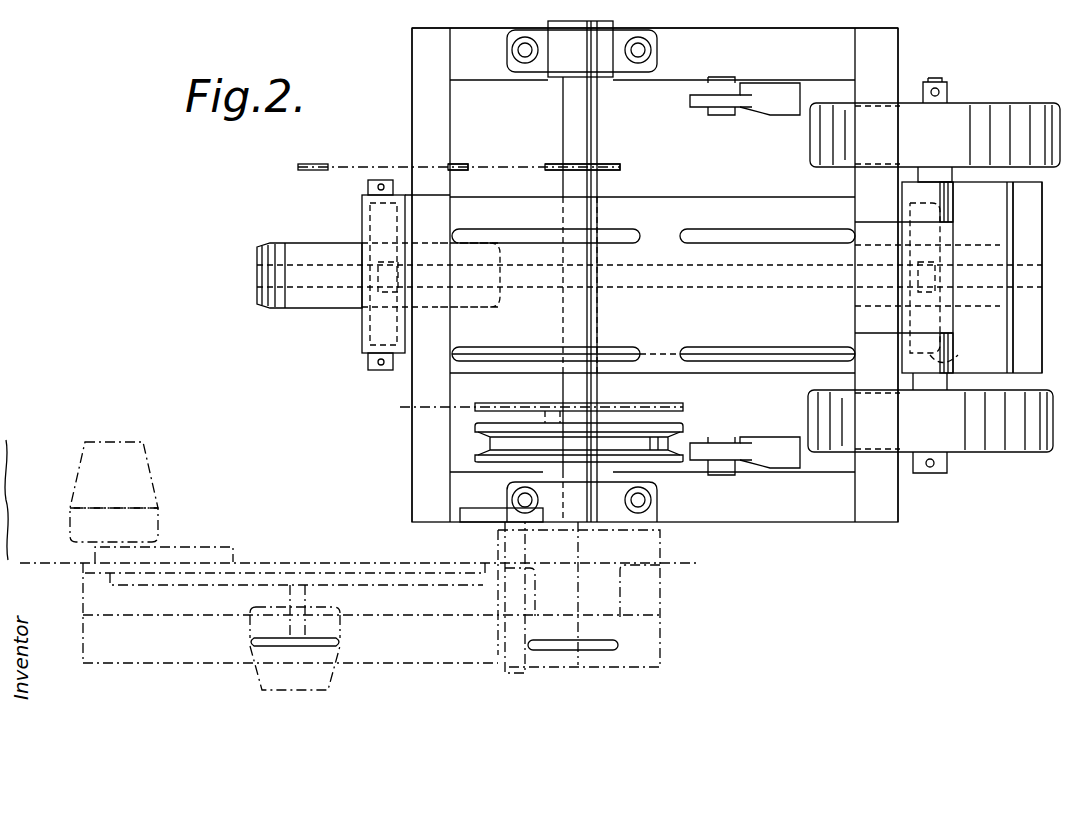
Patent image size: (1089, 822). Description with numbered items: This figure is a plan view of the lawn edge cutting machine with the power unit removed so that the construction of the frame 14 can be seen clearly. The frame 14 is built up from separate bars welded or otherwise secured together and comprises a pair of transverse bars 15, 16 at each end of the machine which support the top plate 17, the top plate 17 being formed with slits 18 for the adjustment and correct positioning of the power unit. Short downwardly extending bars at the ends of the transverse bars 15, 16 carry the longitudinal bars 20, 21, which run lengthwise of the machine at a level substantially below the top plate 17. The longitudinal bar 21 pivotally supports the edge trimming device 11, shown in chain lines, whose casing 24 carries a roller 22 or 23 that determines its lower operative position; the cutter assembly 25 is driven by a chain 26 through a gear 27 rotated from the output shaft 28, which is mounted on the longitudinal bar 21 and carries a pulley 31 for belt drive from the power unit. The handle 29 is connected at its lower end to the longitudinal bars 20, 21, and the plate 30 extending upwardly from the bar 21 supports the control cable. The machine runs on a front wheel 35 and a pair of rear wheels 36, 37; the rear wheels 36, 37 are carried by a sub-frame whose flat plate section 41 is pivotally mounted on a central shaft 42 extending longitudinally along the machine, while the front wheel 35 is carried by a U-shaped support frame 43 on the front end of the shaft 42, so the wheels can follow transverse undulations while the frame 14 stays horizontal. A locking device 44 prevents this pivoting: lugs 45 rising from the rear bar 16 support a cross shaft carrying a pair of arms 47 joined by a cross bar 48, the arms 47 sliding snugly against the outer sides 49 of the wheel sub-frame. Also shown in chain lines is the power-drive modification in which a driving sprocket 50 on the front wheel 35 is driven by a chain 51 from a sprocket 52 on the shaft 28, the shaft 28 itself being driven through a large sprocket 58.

The edge trimming device 11 is at (480, 670).
The frame 14 is at (822, 48).
The transverse bar 15 is at (412, 74).
The transverse bar 16 is at (895, 78).
The top plate 17 is at (674, 208).
The slits 18 is at (685, 236).
The longitudinal bar 20 is at (490, 64).
The longitudinal bar 21 is at (790, 512).
The roller 22 is at (150, 496).
The roller 23 is at (328, 672).
The casing 24 is at (334, 566).
The cutter assembly 25 is at (206, 580).
The chain 26 is at (440, 648).
The gear 27 is at (612, 641).
The output shaft 28 is at (580, 97).
The handle 29 is at (795, 110).
The plate 30 is at (462, 512).
The pulley 31 is at (475, 428).
The front wheel 35 is at (296, 262).
The rear wheel 36 is at (1042, 446).
The rear wheel 37 is at (1026, 122).
The flat plate section 41 is at (910, 313).
The central shaft 42 is at (830, 288).
The U-shaped support frame 43 is at (365, 222).
The locking device 44 is at (1030, 290).
The lugs 45 is at (930, 222).
The arms 47 is at (1050, 376).
The cross bar 48 is at (1032, 330).
The outer sides 49 is at (945, 366).
The driving sprocket 50 is at (330, 164).
The chain 51 is at (504, 166).
The sprocket 52 is at (615, 166).
The large sprocket 58 is at (478, 406).